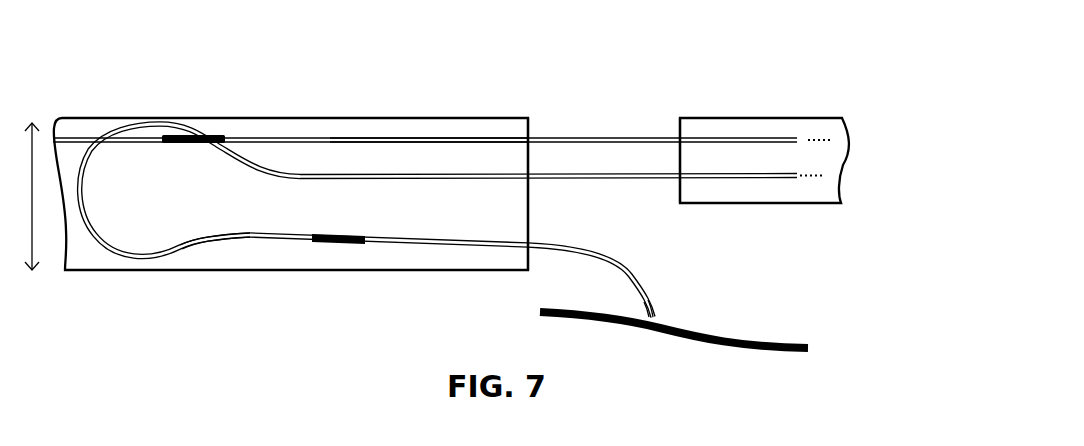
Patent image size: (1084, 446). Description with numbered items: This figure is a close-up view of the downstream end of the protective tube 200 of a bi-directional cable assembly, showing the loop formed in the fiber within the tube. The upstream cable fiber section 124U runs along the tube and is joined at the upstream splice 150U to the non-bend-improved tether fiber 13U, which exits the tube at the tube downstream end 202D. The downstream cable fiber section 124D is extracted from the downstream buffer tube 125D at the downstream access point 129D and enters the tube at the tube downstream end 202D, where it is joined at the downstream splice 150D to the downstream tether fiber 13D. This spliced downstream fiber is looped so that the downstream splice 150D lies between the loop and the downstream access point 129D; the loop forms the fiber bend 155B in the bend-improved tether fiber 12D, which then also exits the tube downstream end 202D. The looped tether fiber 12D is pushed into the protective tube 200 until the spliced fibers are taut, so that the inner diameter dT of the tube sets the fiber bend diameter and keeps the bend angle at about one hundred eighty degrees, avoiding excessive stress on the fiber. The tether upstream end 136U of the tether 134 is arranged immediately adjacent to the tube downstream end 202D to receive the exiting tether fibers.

The protective tube 200 is at (331, 118).
The upstream cable fiber section 124U is at (77, 142).
The non-bend-improved tether fiber 13U is at (400, 138).
The upstream splice 150U is at (192, 144).
The fiber bend 155B is at (84, 196).
The bend-improved tether fiber 12D is at (507, 178).
The downstream cable fiber section 124D is at (412, 241).
The downstream tether fiber 13D is at (207, 242).
The downstream splice 150D is at (338, 236).
The downstream access point 129D is at (661, 311).
The downstream buffer tube 125D is at (710, 332).
The tube downstream end 202D is at (530, 122).
The tether 134 is at (738, 118).
The tether upstream end 136U is at (680, 124).
The inner diameter of protective tube dT is at (32, 220).